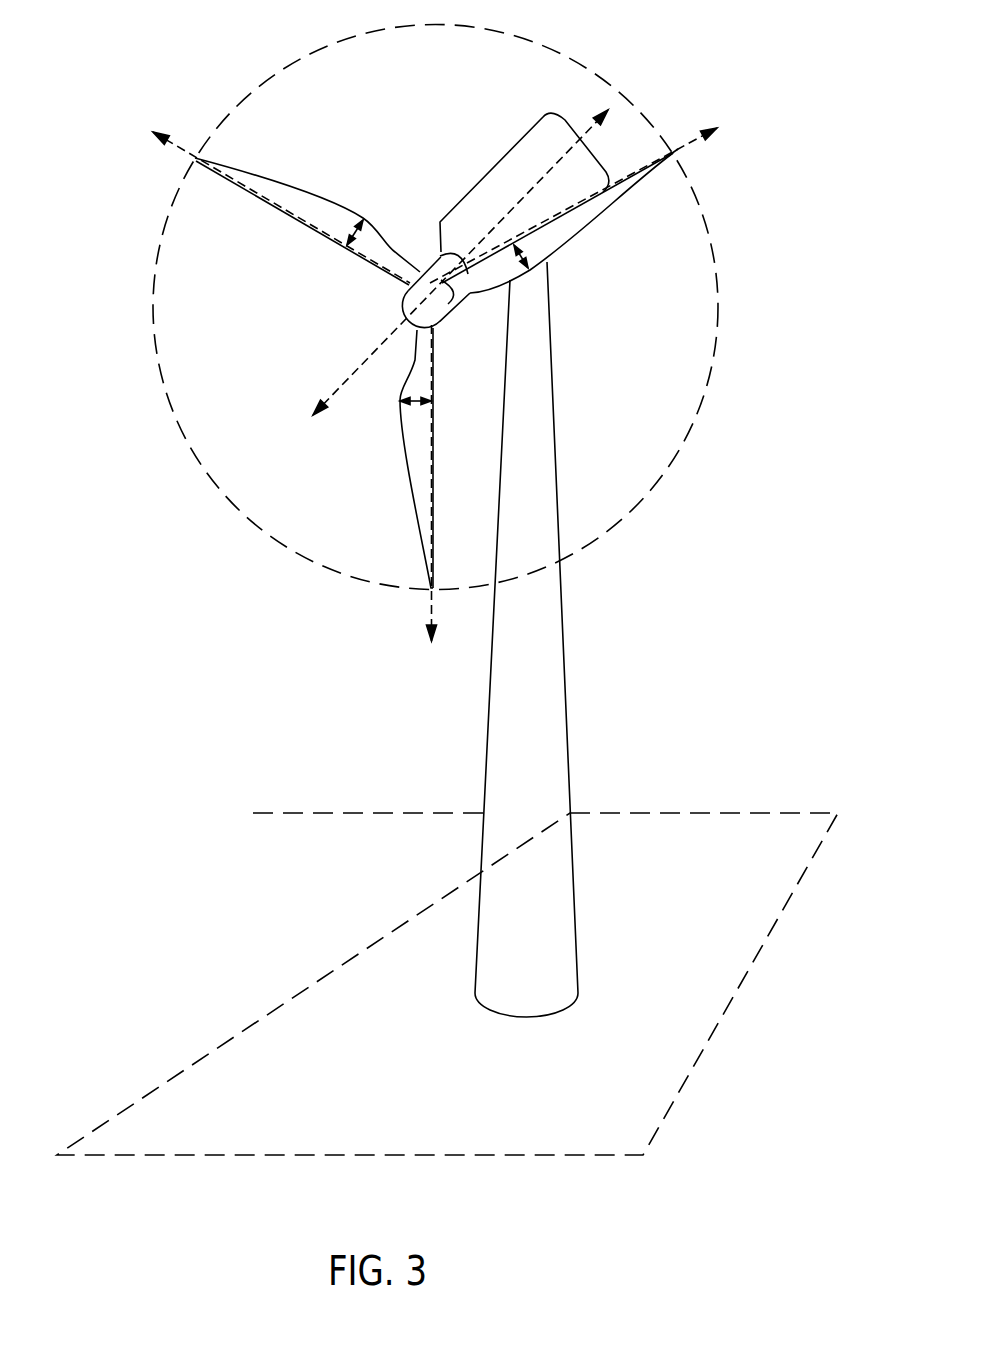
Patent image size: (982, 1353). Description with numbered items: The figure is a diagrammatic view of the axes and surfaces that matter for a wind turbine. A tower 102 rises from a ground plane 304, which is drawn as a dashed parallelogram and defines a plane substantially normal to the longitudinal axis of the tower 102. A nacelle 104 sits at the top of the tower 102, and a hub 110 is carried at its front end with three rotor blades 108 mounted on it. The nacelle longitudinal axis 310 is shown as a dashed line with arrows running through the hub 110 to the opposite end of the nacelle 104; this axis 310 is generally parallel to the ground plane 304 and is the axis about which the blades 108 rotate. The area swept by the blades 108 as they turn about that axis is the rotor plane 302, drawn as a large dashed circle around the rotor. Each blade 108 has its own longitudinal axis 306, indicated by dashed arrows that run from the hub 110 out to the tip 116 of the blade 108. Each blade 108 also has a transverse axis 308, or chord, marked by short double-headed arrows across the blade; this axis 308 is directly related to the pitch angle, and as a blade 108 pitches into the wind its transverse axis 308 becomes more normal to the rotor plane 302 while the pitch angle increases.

The tower 102 is at (540, 638).
The wind turbine nacelle 104 is at (497, 182).
The rotor blades 108 is at (326, 220).
The hub 110 is at (402, 304).
The tip 116 is at (676, 151).
The rotor plane 302 is at (720, 298).
The ground plane 304 is at (784, 813).
The blade longitudinal axis 306 is at (200, 130).
The blade transverse axis 308 is at (378, 244).
The nacelle longitudinal axis 310 is at (588, 130).